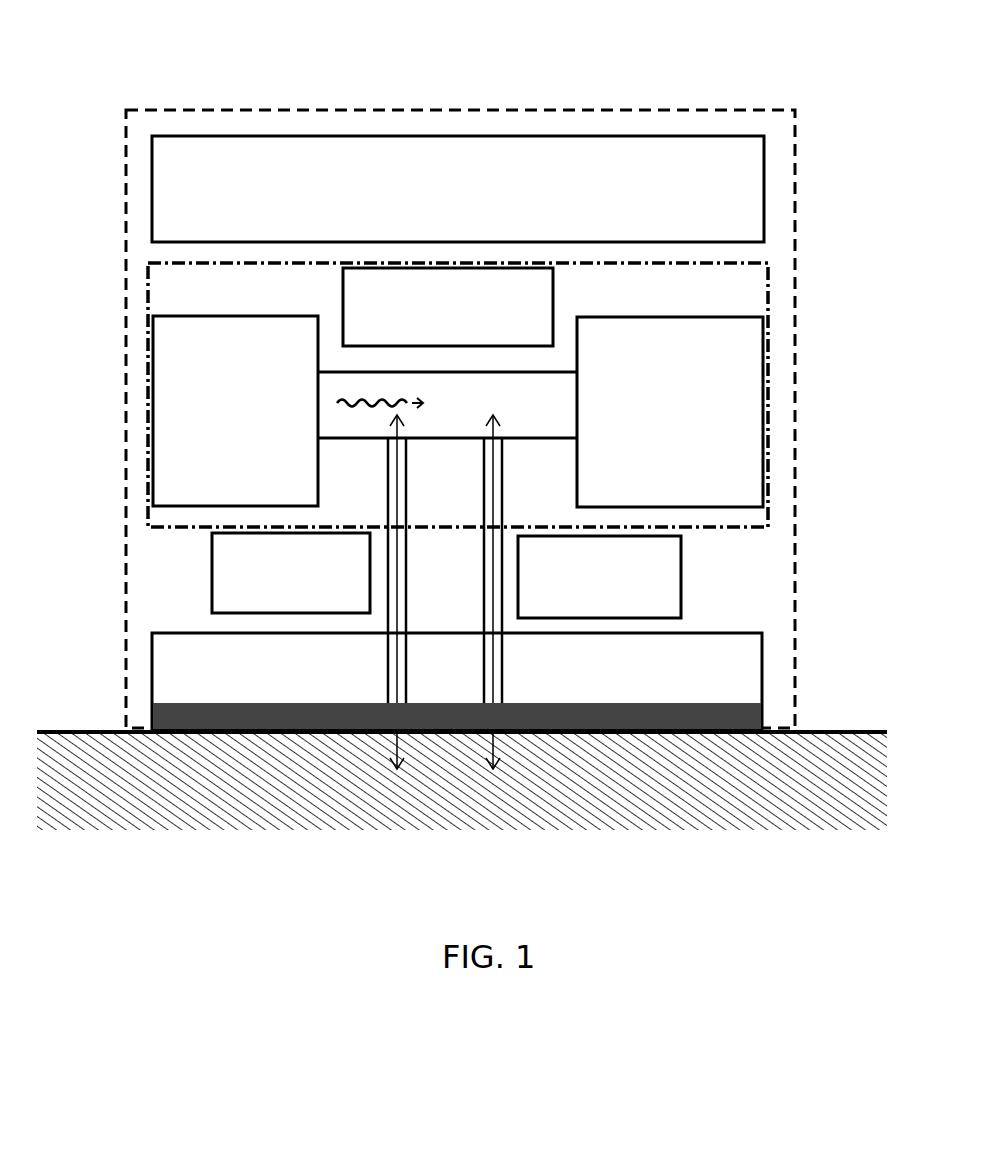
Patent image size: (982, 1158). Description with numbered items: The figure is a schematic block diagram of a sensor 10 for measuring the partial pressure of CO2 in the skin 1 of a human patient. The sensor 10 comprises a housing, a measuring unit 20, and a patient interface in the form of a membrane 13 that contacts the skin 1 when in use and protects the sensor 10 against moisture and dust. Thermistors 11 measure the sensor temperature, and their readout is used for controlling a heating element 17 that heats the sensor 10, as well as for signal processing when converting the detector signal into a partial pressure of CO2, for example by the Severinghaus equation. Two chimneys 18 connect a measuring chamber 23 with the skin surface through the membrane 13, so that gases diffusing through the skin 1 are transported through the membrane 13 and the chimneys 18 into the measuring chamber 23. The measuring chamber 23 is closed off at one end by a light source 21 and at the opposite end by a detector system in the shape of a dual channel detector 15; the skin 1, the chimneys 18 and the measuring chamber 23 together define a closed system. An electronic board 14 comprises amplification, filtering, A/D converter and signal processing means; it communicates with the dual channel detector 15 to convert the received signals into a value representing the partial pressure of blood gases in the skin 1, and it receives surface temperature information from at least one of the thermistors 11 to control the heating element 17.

The skin 1 is at (757, 807).
The sensor 10 is at (330, 110).
The thermistors 11 is at (222, 577).
The membrane 13 is at (715, 722).
The electronic board 14 is at (515, 296).
The dual channel detector 15 is at (735, 408).
The heating element 17 is at (708, 207).
The chimneys 18 is at (484, 482).
The measuring unit 20 is at (688, 284).
The light source 21 is at (236, 358).
The measuring chamber 23 is at (525, 408).